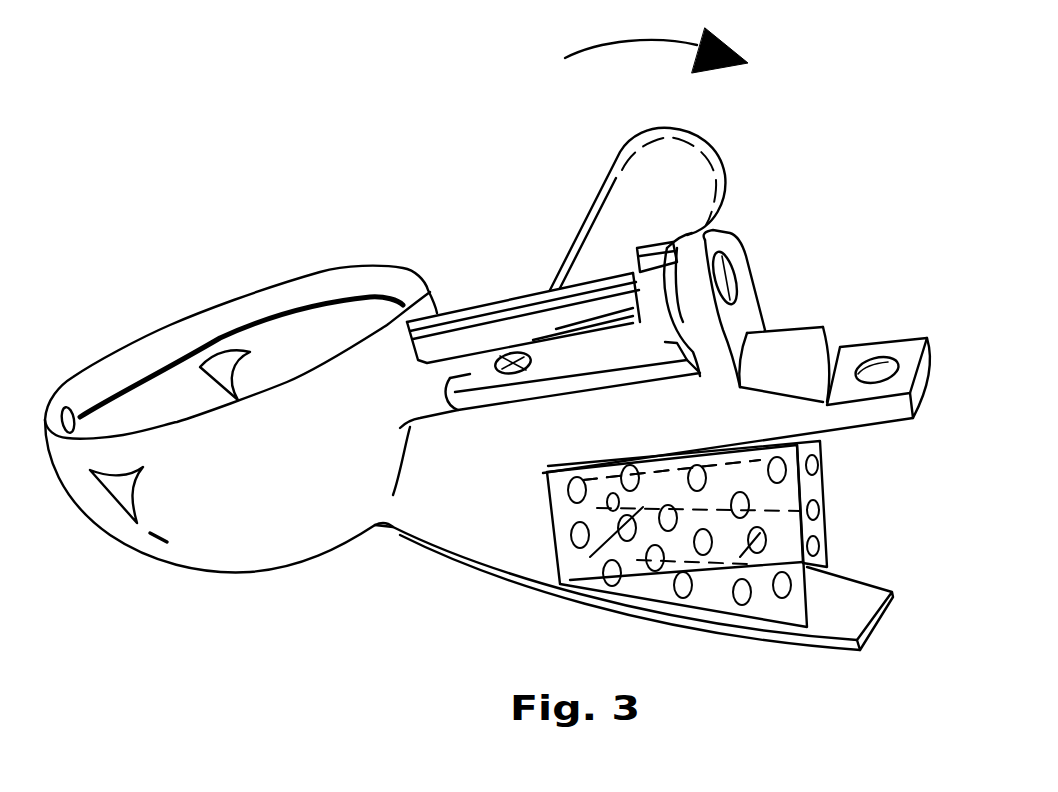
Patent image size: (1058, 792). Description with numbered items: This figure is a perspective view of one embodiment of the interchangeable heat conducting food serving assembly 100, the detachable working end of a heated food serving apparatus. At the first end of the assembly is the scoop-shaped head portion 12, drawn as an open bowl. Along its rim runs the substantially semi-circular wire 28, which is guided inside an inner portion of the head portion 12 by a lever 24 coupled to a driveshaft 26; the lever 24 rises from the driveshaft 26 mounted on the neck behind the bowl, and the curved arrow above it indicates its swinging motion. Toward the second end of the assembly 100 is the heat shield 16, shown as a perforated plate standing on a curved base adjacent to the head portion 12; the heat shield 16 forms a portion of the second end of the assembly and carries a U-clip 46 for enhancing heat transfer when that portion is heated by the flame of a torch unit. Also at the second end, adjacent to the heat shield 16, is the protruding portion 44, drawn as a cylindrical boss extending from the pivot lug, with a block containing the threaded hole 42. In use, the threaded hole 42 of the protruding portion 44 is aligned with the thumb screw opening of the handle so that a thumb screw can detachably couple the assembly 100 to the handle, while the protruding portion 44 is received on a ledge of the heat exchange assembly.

The scoop-shaped head portion 12 is at (235, 478).
The heat shield 16 is at (807, 593).
The lever 24 is at (728, 168).
The driveshaft 26 is at (510, 310).
The substantially semi-circular wire 28 is at (268, 313).
The threaded hole 42 is at (873, 360).
The protruding portion 44 is at (867, 413).
The U-clip 46 is at (735, 562).
The interchangeable heat conducting food serving assembly 100 is at (379, 550).